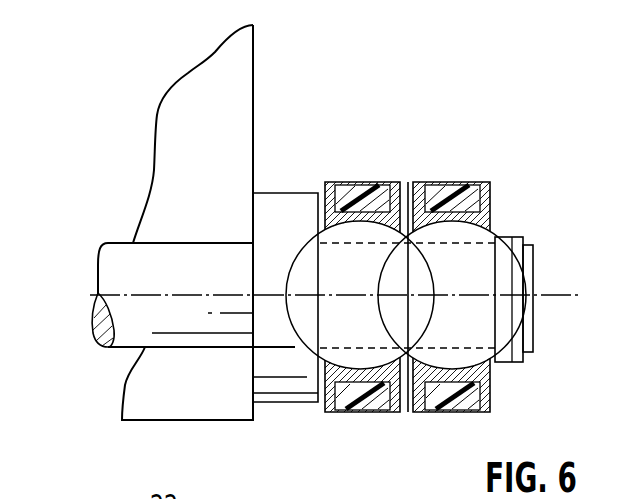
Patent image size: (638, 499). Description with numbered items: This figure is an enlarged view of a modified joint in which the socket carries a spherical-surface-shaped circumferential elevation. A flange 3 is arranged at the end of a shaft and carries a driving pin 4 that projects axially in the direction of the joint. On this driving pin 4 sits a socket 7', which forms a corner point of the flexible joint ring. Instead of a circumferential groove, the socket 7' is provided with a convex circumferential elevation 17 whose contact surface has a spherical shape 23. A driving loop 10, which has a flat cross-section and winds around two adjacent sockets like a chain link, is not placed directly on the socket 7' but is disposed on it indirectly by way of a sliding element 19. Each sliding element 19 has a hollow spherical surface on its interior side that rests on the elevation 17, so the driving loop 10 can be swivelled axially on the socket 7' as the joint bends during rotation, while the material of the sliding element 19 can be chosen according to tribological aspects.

The flange 3 is at (165, 145).
The driving pin 4 is at (115, 273).
The driving loop 10 is at (434, 182).
The circumferential elevation 17 is at (360, 285).
The sliding element 19 is at (492, 230).
The spherical shape 23 is at (494, 363).
The socket 7' is at (548, 282).